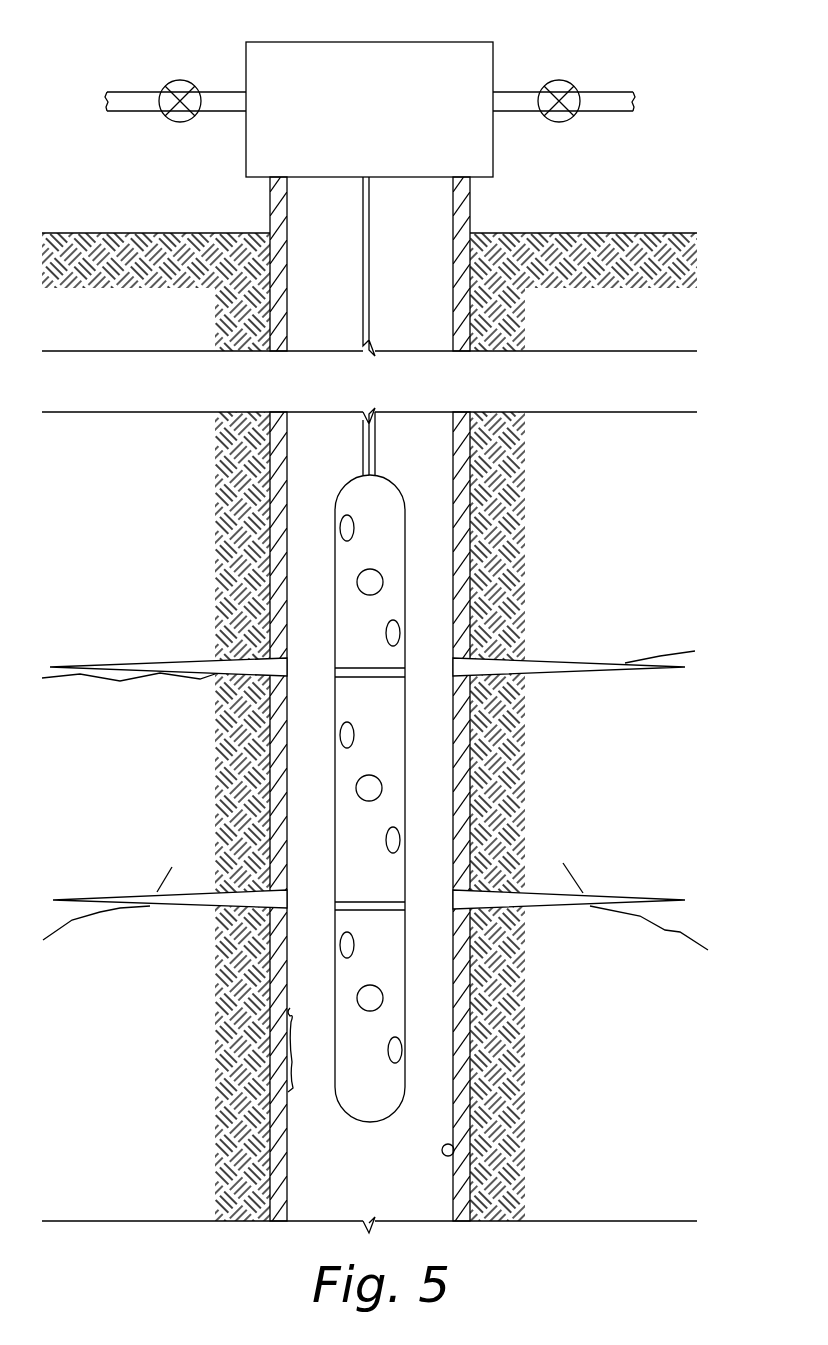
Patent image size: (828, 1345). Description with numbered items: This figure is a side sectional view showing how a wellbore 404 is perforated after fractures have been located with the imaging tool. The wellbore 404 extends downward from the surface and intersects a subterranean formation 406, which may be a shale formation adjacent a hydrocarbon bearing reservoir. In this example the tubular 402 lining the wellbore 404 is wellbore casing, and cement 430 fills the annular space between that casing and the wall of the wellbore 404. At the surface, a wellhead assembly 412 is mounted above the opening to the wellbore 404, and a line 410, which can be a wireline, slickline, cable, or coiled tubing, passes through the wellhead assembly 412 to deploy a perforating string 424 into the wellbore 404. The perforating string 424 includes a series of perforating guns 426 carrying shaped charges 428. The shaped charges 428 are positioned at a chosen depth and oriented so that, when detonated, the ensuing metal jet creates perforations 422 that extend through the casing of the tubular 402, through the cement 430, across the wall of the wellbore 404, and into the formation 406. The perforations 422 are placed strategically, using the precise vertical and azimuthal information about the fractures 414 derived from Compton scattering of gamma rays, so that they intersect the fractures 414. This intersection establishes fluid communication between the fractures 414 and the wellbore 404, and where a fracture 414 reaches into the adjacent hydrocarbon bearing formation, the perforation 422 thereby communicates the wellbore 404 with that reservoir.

The tubular 402 is at (452, 1156).
The wellbore 404 is at (424, 453).
The subterranean formation 406 is at (245, 1155).
The line 410 is at (362, 228).
The wellhead assembly 412 is at (573, 183).
The fractures 414 is at (680, 652).
The perforations 422 is at (610, 893).
The perforating string 424 is at (272, 790).
The perforating guns 426 is at (363, 500).
The shaped charges 428 is at (357, 1000).
The cement 430 is at (473, 1108).